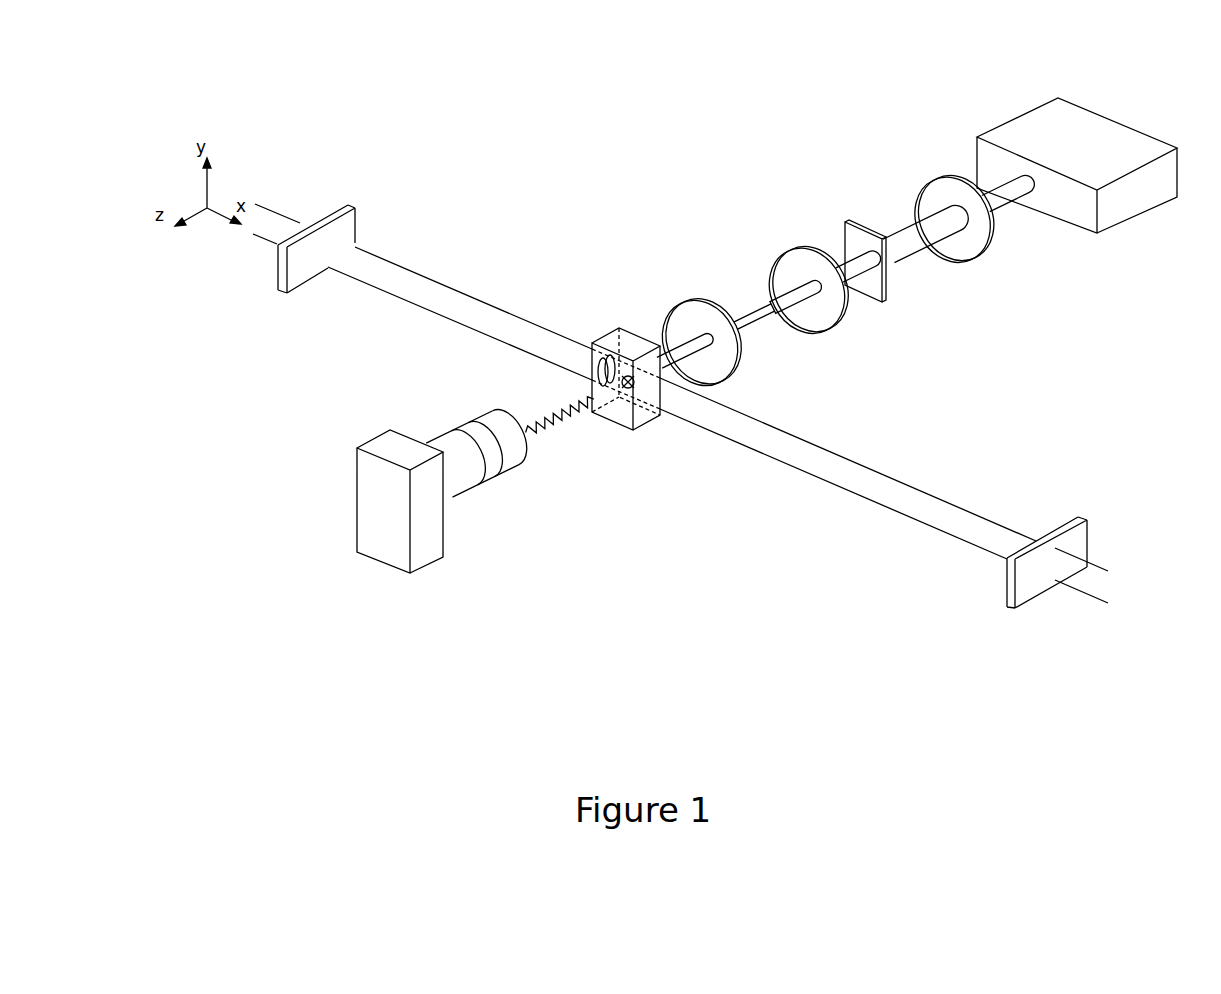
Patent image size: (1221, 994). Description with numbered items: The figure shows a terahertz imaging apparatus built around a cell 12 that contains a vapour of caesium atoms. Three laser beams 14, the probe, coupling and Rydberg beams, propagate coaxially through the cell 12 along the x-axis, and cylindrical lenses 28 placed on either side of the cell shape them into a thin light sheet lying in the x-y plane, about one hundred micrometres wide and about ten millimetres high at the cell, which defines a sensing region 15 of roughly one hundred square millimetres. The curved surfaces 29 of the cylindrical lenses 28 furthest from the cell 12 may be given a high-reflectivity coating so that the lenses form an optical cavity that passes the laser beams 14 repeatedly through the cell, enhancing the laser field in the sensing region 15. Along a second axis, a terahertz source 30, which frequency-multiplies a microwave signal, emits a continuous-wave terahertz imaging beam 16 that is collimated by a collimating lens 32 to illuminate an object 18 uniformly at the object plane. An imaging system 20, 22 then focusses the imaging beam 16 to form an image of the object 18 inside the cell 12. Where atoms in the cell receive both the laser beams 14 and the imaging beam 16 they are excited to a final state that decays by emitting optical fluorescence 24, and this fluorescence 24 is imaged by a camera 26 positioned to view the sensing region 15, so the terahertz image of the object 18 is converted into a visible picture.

The cell 12 is at (650, 422).
The laser beams 14 is at (470, 308).
The sensing region 15 is at (632, 330).
The terahertz-frequency imaging beam 16 is at (910, 243).
The object 18 is at (860, 240).
The imaging system 20 is at (795, 263).
The imaging system 22 is at (695, 322).
The optical fluorescence 24 is at (560, 427).
The camera 26 is at (392, 547).
The cylindrical lenses 28 is at (343, 228).
The curved surfaces 29 is at (682, 395).
The terahertz source 30 is at (1038, 123).
The collimating lens 32 is at (967, 248).